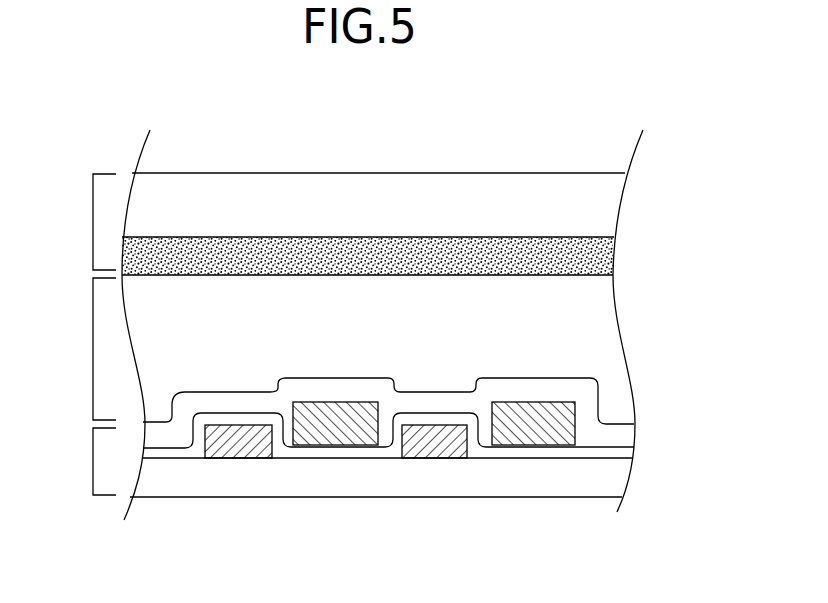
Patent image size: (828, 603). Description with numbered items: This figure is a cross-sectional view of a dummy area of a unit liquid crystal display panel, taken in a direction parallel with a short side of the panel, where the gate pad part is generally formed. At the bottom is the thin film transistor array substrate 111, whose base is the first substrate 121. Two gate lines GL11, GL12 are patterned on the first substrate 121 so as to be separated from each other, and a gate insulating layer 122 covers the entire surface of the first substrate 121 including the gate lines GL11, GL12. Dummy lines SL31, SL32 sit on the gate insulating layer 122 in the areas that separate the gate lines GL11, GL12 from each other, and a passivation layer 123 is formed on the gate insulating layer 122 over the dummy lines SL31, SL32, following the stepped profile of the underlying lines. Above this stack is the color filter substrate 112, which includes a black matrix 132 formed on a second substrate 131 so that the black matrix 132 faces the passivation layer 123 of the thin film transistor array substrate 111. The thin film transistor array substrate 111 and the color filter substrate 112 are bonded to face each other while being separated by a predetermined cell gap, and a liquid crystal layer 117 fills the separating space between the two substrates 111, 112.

The color filter substrate 112 is at (348, 202).
The second substrate 131 is at (602, 209).
The black matrix 132 is at (602, 257).
The liquid crystal layer 117 is at (344, 349).
The thin film transistor array substrate 111 is at (344, 472).
The first substrate 121 is at (612, 477).
The gate insulating layer 122 is at (623, 452).
The passivation layer 123 is at (623, 432).
The gate line GL11 is at (232, 446).
The gate line GL12 is at (432, 448).
The dummy line SL31 is at (335, 430).
The dummy line SL32 is at (532, 432).